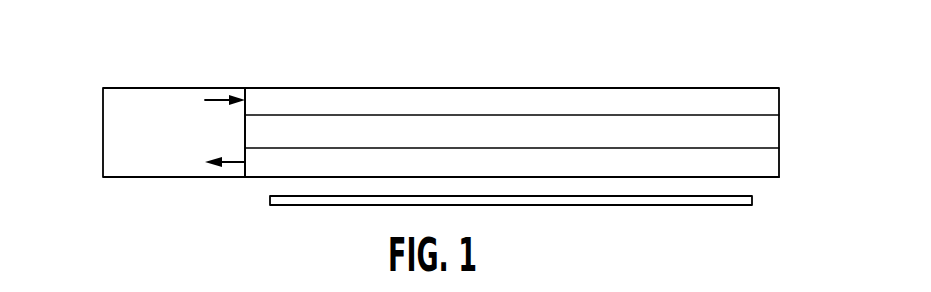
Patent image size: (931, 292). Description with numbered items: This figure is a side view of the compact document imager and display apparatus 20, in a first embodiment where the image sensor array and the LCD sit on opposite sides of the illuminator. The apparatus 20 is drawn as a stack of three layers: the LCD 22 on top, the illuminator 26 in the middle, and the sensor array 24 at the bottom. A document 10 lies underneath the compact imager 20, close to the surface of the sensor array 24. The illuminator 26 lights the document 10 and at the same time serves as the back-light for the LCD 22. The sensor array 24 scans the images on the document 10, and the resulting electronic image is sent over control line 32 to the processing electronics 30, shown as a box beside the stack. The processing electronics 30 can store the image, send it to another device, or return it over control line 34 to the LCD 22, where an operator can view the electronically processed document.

The document 10 is at (740, 208).
The compact document imager and display apparatus 20 is at (486, 60).
The LCD 22 is at (742, 88).
The sensor array 24 is at (779, 165).
The illuminator 26 is at (779, 128).
The processing electronics 30 is at (102, 137).
The control line 32 is at (231, 162).
The control line 34 is at (215, 99).